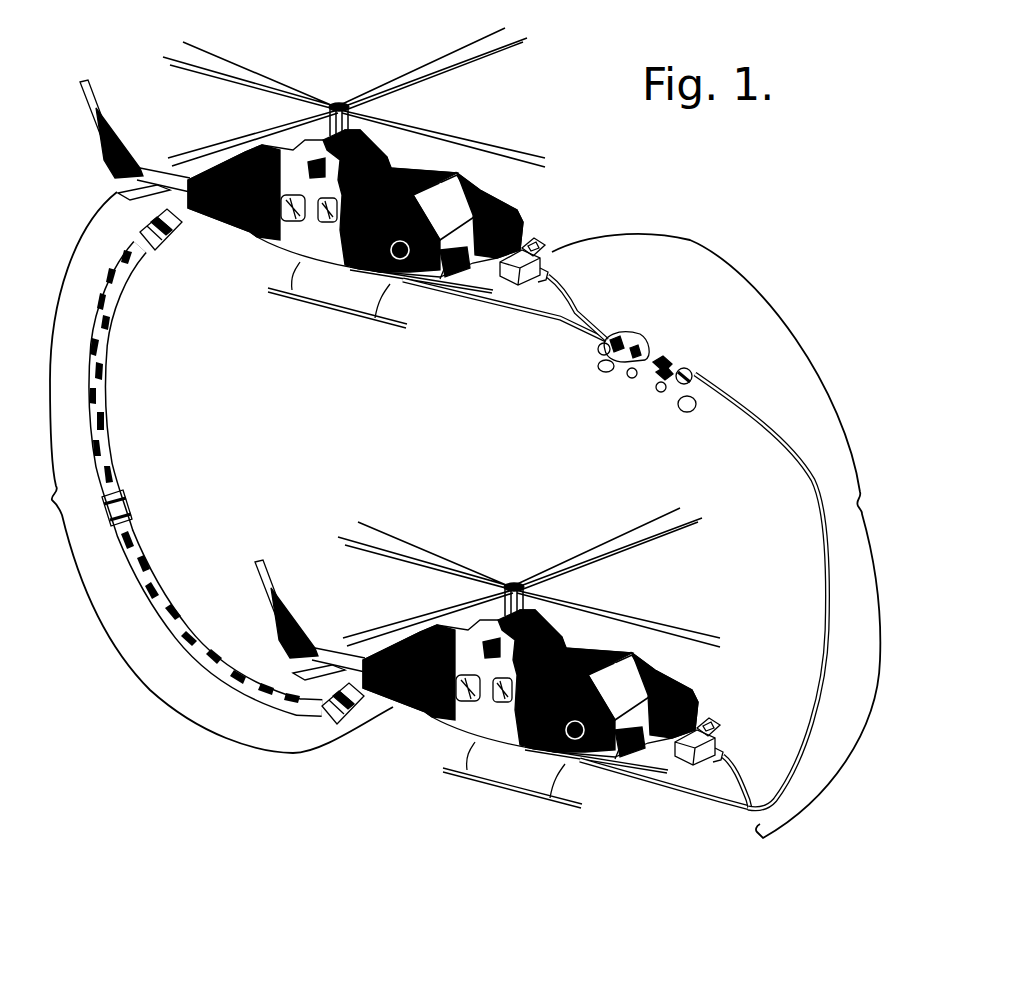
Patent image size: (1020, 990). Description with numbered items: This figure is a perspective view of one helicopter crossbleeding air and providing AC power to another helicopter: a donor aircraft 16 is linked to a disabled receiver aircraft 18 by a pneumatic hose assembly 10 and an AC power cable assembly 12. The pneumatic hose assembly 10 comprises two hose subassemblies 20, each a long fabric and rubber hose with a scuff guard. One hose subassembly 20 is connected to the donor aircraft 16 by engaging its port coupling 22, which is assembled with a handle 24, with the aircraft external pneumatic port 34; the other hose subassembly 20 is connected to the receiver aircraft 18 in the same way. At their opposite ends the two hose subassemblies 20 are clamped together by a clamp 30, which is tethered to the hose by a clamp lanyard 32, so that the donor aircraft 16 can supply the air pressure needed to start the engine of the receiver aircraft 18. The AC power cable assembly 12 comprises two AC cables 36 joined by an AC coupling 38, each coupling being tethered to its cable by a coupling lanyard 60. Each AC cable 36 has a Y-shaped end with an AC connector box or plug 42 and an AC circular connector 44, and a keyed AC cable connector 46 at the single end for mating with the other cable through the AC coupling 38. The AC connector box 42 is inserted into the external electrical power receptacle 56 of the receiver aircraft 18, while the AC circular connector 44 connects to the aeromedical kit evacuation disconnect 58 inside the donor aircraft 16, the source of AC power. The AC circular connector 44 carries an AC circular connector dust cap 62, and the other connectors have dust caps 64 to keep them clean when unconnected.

The pneumatic hose assembly 10 is at (208, 472).
The AC power cable assembly 12 is at (724, 536).
The donor aircraft 16 is at (357, 130).
The receiver aircraft 18 is at (512, 590).
The hose subassembly 20 is at (108, 359).
The port coupling 22 is at (165, 220).
The handle 24 is at (330, 716).
The clamp 30 is at (127, 506).
The clamp lanyard 32 is at (705, 800).
The aircraft external pneumatic port 34 is at (196, 208).
The AC cable 36 is at (523, 314).
The AC coupling 38 is at (665, 358).
The AC connector box or plug 42 is at (530, 274).
The AC circular connector 44 is at (370, 263).
The keyed AC cable connector 46 is at (690, 366).
The external electrical power receptacle 56 is at (512, 232).
The aeromedical kit evacuation disconnect 58 is at (421, 268).
The coupling lanyard 60 is at (630, 342).
The AC circular connector dust cap 62 is at (403, 268).
The dust cap 64 is at (606, 375).